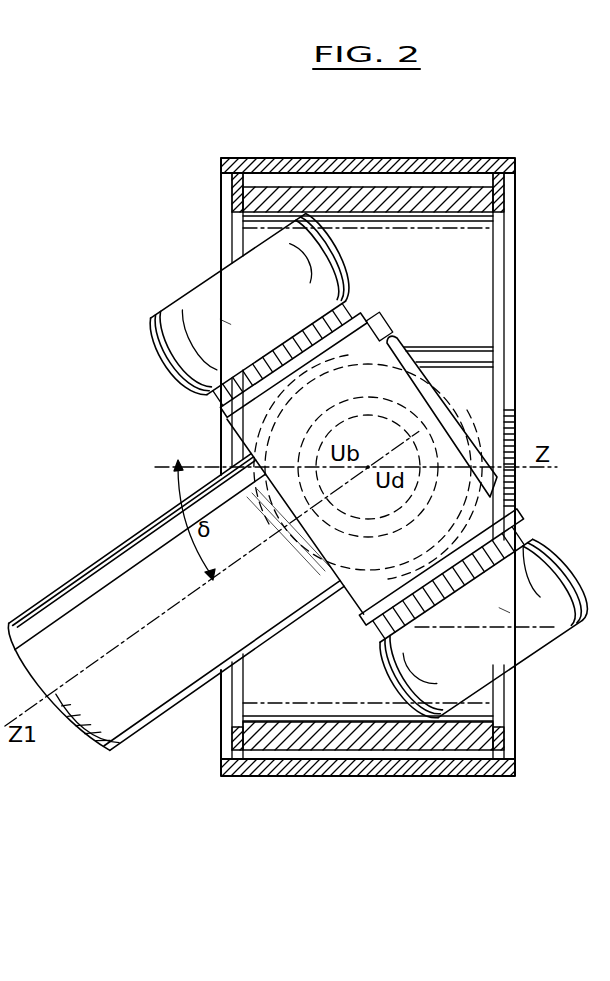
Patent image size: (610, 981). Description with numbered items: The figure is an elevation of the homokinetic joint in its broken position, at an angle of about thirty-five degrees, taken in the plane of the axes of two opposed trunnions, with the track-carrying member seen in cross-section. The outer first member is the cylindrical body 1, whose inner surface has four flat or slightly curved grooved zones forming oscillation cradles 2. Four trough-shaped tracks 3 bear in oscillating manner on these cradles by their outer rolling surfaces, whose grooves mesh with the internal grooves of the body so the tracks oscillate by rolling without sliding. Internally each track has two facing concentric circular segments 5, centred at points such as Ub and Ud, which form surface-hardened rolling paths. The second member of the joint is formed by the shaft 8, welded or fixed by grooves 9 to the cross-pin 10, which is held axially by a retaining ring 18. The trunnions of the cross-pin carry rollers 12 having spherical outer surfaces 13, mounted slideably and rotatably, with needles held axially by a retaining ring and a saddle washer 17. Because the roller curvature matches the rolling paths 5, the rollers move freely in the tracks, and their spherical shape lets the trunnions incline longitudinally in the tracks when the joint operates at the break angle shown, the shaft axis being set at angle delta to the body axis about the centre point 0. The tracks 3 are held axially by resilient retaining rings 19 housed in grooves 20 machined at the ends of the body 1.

The cylindrical body 1 is at (386, 158).
The oscillation cradles 2 is at (420, 176).
The trough-shaped tracks 3 is at (455, 195).
The concentric circular segments 5 is at (356, 464).
The shaft 8 is at (79, 575).
The grooves 9 is at (289, 421).
The cross-pin 10 is at (240, 432).
The rollers 12 is at (174, 298).
The spherical outer surfaces 13 is at (237, 302).
The saddle washer 17 is at (233, 388).
The retaining ring 18 is at (390, 334).
The resilient retaining rings 19 is at (235, 198).
The grooves 20 is at (505, 222).
The center point 0 is at (368, 470).